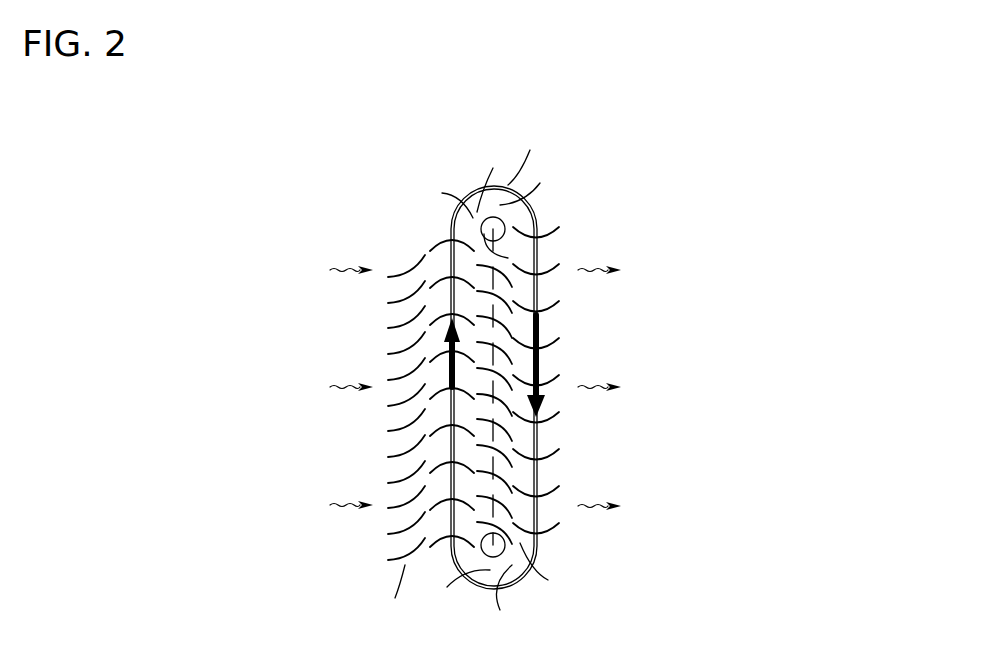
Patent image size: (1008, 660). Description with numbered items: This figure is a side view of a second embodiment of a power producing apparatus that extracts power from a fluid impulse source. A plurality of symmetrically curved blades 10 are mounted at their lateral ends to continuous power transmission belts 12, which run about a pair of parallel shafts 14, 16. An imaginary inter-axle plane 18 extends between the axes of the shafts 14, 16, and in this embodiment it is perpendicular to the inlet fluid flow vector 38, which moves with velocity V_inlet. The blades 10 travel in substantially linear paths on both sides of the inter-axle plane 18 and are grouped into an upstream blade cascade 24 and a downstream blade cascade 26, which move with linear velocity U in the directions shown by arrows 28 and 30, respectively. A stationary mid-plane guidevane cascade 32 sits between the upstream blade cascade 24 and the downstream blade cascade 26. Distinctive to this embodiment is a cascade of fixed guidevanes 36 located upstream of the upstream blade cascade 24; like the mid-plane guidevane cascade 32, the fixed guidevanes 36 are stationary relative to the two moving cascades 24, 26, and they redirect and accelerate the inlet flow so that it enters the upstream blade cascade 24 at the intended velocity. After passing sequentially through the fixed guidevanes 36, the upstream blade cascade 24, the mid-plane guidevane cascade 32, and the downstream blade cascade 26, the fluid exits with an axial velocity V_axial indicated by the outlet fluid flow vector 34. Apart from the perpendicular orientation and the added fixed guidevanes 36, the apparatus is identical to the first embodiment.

The symmetrically curved blades 10 is at (550, 533).
The continuous power transmission belts 12 is at (507, 192).
The shaft 14 is at (503, 550).
The shaft 16 is at (487, 216).
The inter-axle plane 18 is at (488, 278).
The upstream blade cascade 24 is at (441, 556).
The downstream blade cascade 26 is at (551, 218).
The arrow indicating linear velocity U of upstream blade cascade 28 is at (447, 358).
The arrow indicating linear velocity U of downstream blade cascade 30 is at (550, 395).
The mid-plane guidevane cascade 32 is at (483, 518).
The outlet fluid flow vector 34 is at (603, 258).
The fixed guidevanes 36 is at (410, 240).
The inlet fluid flow vector 38 is at (353, 263).